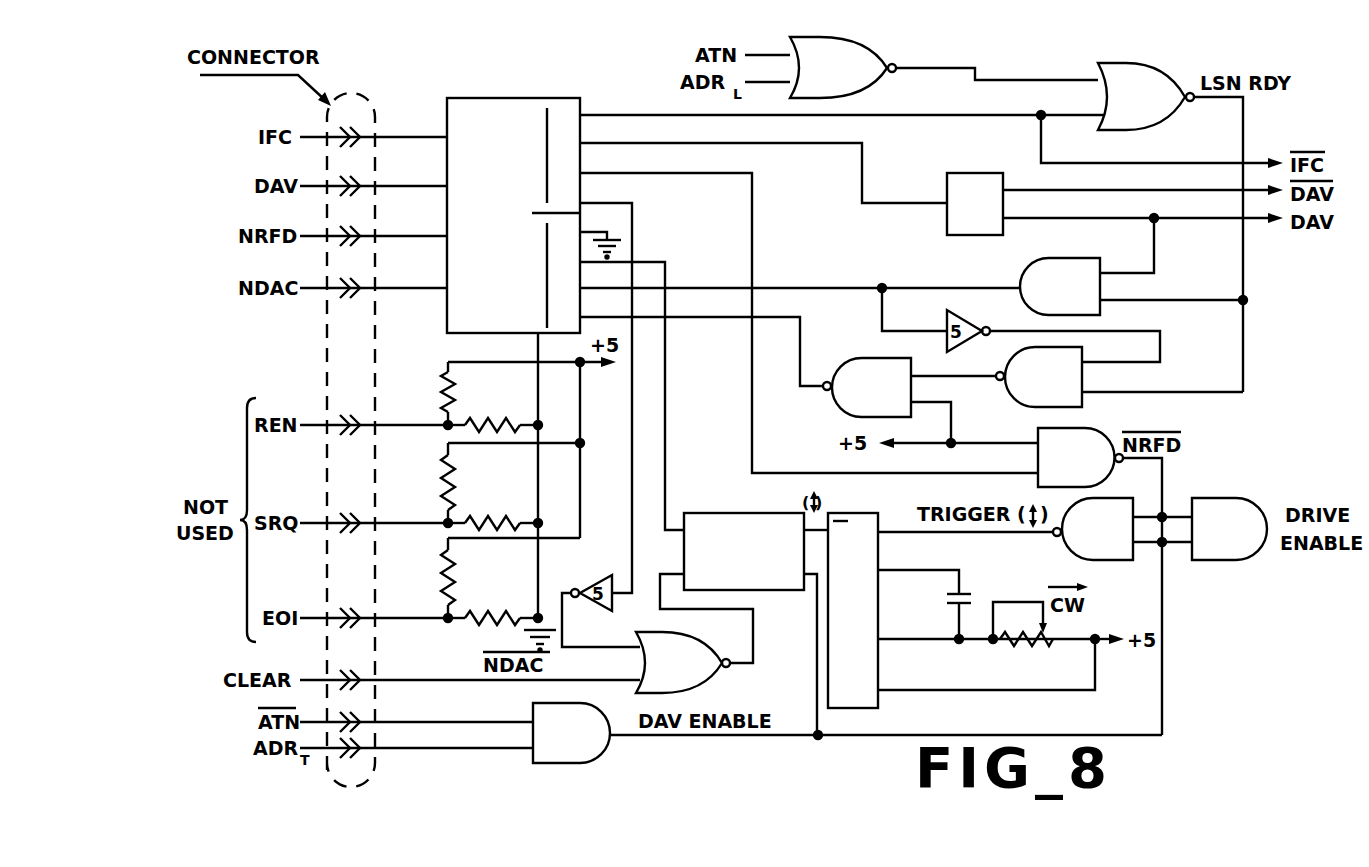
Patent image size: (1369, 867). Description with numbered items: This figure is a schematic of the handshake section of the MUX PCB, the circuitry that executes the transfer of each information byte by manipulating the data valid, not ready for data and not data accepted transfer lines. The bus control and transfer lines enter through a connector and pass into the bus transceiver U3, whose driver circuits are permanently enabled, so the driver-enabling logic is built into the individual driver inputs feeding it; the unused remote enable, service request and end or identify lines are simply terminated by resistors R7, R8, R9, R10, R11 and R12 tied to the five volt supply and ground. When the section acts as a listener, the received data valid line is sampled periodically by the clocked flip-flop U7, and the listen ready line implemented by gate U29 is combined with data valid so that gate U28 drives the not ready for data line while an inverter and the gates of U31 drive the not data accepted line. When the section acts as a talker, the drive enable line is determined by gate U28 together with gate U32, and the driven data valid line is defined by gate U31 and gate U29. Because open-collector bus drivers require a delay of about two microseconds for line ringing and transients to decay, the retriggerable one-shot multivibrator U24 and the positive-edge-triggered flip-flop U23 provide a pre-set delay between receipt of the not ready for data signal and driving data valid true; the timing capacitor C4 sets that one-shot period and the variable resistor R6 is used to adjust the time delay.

The bus transceiver U3 is at (513, 215).
The clocked flip-flop U7 is at (975, 204).
The positive-edge-triggered flip-flop U23 is at (744, 551).
The retriggerable one-shot multivibrator U24 is at (853, 610).
The gate U28 is at (816, 510).
The gate U29 is at (915, 365).
The gate U31 is at (978, 453).
The gate U32 is at (1229, 529).
The resistor R6 is at (1023, 639).
The resistor R7 is at (429, 393).
The resistor R8 is at (493, 411).
The resistor R9 is at (429, 483).
The resistor R10 is at (493, 507).
The resistor R11 is at (429, 578).
The resistor R12 is at (493, 604).
The capacitor C4 is at (938, 600).